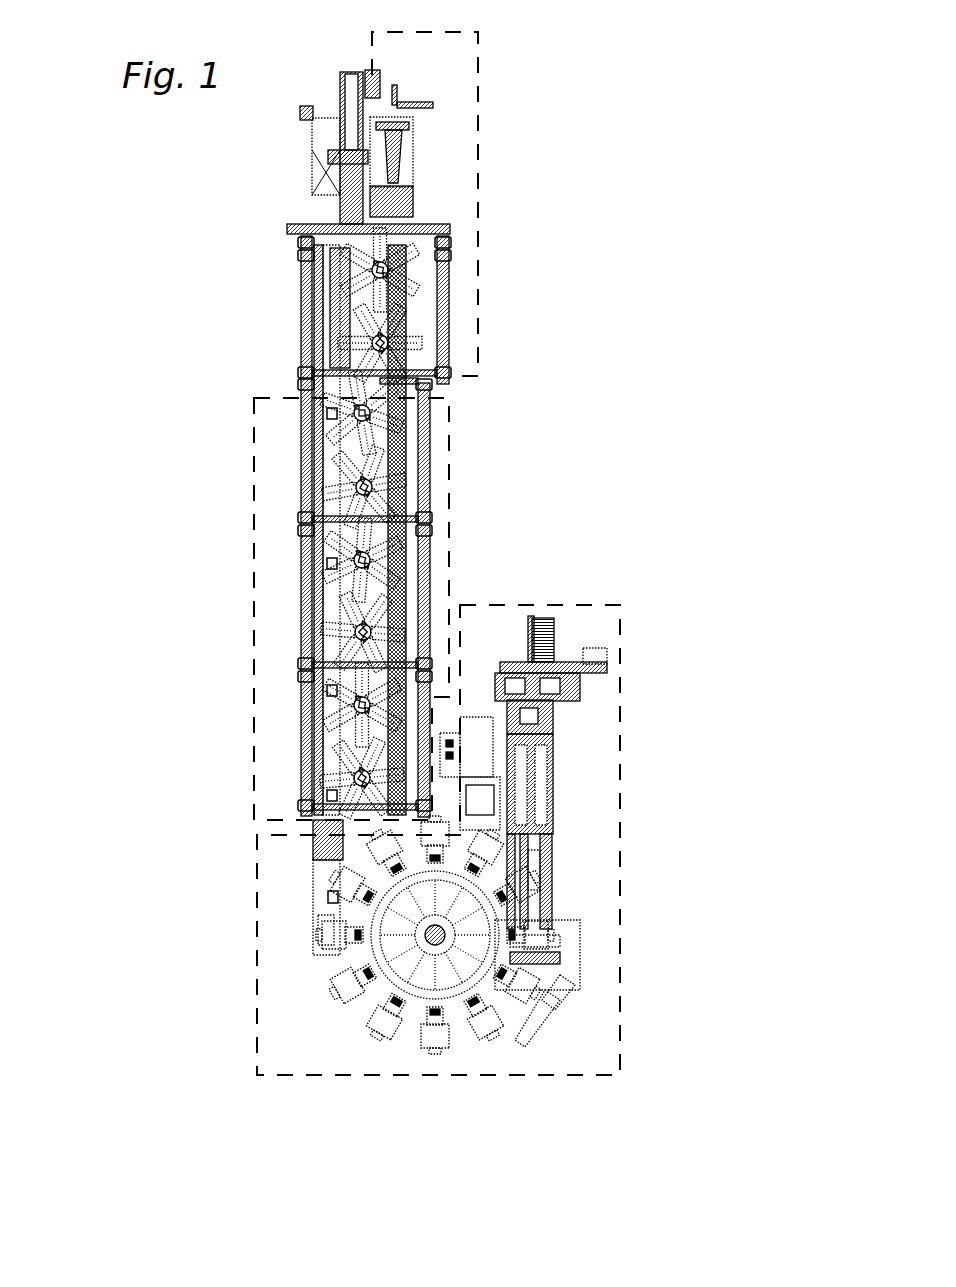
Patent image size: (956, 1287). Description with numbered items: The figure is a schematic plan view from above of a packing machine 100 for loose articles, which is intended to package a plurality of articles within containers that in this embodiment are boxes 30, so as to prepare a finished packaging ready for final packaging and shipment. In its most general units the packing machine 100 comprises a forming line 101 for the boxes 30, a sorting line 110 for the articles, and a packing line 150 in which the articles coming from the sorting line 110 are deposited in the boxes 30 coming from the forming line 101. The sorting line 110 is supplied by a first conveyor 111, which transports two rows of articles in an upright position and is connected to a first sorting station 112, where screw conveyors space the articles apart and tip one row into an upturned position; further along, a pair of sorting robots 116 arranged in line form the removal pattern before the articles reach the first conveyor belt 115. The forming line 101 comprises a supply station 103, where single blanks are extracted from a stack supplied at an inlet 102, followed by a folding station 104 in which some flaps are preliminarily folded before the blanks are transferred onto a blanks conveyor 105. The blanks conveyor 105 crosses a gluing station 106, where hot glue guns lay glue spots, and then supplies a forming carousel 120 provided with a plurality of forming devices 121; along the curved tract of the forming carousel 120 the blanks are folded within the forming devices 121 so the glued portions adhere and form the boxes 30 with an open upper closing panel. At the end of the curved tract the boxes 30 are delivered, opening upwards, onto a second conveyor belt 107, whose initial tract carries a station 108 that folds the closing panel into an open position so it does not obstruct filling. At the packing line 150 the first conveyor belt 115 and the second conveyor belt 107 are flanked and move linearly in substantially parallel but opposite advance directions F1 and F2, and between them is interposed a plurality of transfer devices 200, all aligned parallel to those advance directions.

The packing machine 100 is at (634, 372).
The forming line 101 is at (626, 850).
The inlet 102 is at (556, 638).
The supply station 103 is at (573, 703).
The folding station 104 is at (558, 730).
The blanks conveyor 105 is at (553, 802).
The gluing station 106 is at (550, 957).
The second conveyor belt 107 is at (322, 835).
The station 108 is at (330, 868).
The sorting line 110 is at (490, 148).
The first conveyor 111 is at (400, 93).
The first sorting station 112 is at (400, 165).
The first conveyor belt 115 is at (430, 383).
The sorting robots 116 is at (395, 272).
The forming carousel 120 is at (401, 963).
The forming devices 121 is at (380, 1042).
The packing line 150 is at (456, 550).
The transfer devices 200 is at (350, 412).
The boxes 30 is at (330, 414).
The advance direction F1 is at (462, 500).
The advance direction F2 is at (278, 438).